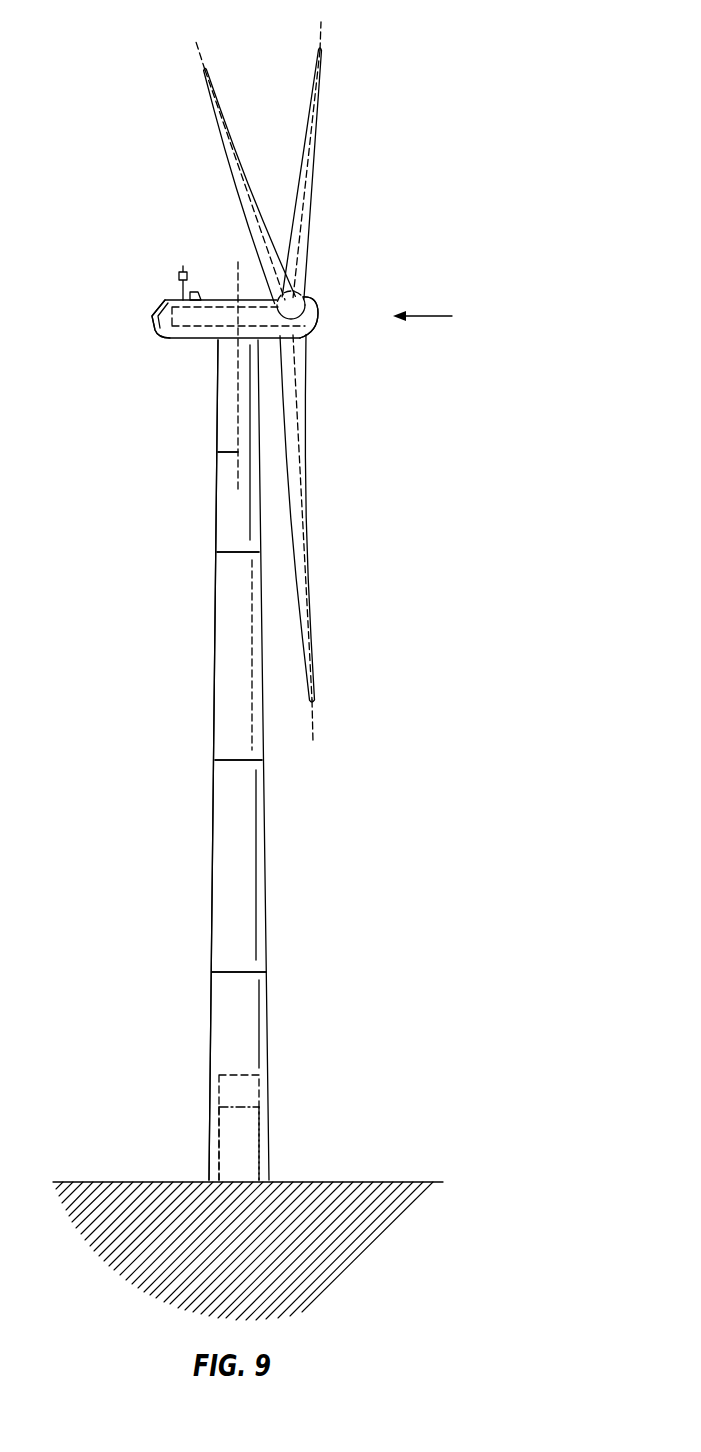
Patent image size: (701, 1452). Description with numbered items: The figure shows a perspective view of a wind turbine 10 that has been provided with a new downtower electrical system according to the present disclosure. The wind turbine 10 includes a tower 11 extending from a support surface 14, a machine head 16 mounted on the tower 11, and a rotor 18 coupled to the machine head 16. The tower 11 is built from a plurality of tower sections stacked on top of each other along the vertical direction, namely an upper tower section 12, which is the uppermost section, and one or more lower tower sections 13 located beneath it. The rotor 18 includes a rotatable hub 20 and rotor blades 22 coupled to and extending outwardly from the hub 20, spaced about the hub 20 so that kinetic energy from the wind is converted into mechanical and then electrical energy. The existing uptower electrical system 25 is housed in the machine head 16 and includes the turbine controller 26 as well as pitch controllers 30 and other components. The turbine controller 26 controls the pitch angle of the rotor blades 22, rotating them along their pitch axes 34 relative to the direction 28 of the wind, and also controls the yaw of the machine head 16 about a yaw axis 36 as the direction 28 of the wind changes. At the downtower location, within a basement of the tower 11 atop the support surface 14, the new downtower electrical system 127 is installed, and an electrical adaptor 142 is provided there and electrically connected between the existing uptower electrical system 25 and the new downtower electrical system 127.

The wind turbine 10 is at (428, 95).
The tower 11 is at (231, 828).
The upper tower section 12 is at (232, 518).
The lower tower section 13 is at (230, 708).
The support surface 14 is at (112, 1180).
The machine head 16 is at (197, 340).
The rotor 18 is at (315, 292).
The rotatable hub 20 is at (316, 325).
The rotor blade 22 is at (232, 162).
The uptower electrical system 25 is at (211, 300).
The turbine controller 26 is at (152, 320).
The direction of the wind 28 is at (425, 316).
The pitch controller 30 is at (313, 318).
The pitch axis 34 is at (198, 42).
The yaw axis 36 is at (218, 452).
The new downtower electrical system 127 is at (262, 1135).
The electrical adaptor 142 is at (262, 1078).